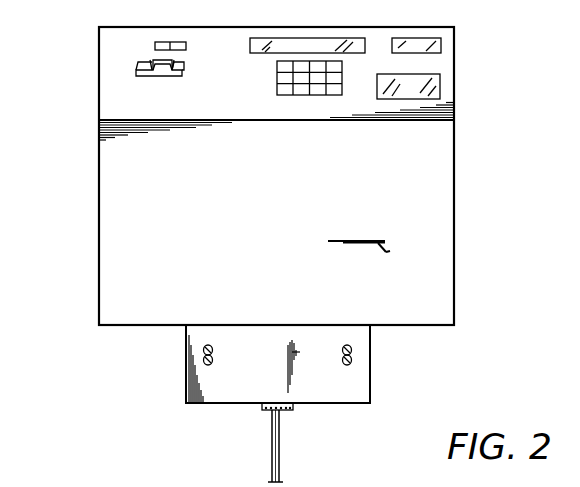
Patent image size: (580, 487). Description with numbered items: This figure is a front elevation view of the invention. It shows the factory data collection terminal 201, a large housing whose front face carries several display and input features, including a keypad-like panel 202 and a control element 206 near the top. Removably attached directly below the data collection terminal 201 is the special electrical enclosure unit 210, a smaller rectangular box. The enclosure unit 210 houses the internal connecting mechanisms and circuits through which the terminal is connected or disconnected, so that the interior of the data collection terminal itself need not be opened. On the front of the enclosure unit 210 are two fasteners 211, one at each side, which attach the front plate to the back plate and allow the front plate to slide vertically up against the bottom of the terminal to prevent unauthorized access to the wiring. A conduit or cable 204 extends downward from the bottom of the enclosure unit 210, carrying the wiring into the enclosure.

The factory data collection terminal 201 is at (456, 51).
The keypad 202 is at (277, 82).
The cable 204 is at (279, 449).
The control 206 is at (133, 70).
The electrical enclosure unit 210 is at (370, 376).
The knobs 211 is at (343, 346).